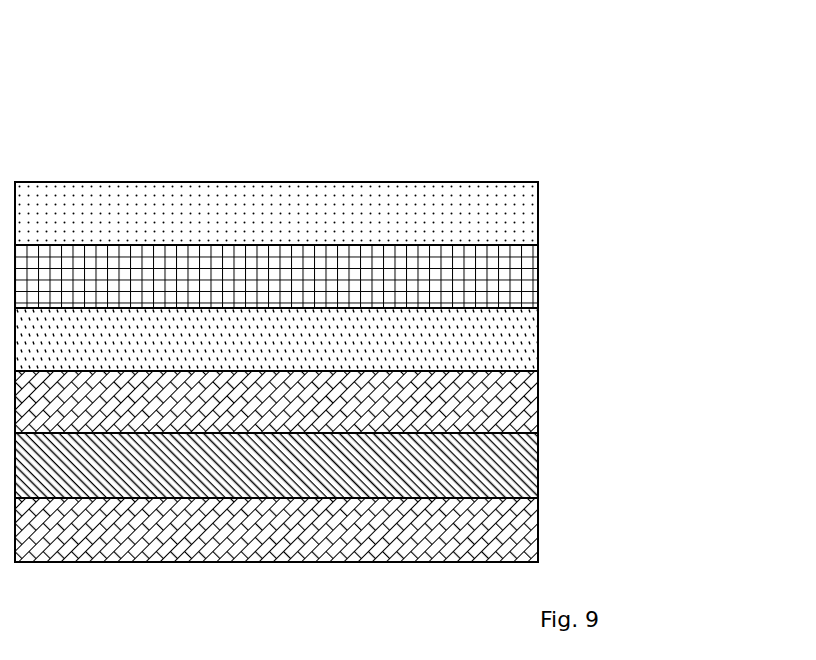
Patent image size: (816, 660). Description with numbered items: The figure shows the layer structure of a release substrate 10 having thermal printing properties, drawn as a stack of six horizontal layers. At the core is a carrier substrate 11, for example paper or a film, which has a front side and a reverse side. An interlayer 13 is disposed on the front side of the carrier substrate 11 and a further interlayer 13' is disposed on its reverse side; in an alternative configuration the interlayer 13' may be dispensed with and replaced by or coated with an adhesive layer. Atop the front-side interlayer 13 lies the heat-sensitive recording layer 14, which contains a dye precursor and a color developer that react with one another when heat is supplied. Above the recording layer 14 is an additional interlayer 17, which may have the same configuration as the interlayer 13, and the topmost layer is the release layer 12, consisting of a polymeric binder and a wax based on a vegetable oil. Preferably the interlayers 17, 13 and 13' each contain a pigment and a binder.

The release substrate 10 is at (529, 145).
The release layer 12 is at (530, 212).
The additional interlayer 17 is at (530, 276).
The heat-sensitive recording layer 14 is at (530, 340).
The interlayer 13 is at (382, 382).
The carrier substrate 11 is at (530, 462).
The interlayer 13' is at (384, 510).